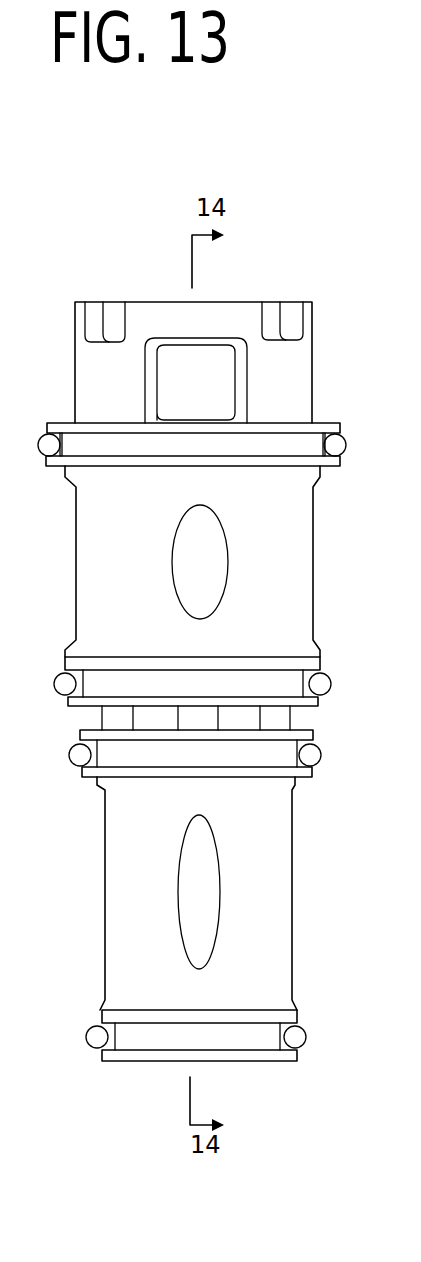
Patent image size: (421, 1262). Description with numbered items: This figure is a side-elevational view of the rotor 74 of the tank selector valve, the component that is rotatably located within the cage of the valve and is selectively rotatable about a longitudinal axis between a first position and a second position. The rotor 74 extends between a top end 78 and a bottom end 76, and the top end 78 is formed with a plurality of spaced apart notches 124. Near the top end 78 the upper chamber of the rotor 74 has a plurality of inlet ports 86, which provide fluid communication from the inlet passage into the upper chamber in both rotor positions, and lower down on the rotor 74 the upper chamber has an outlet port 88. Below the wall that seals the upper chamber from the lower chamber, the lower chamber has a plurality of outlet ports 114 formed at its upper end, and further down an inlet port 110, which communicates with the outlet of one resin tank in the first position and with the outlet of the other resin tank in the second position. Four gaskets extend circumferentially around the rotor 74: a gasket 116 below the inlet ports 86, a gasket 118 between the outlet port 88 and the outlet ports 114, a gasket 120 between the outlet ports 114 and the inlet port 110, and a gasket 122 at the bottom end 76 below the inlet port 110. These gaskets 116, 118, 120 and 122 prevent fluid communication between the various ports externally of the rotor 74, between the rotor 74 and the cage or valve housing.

The rotor 74 is at (52, 396).
The bottom end 76 is at (295, 1058).
The top end 78 is at (312, 303).
The inlet ports 86 is at (233, 383).
The outlet port 88 is at (224, 559).
The inlet port 110 is at (216, 872).
The outlet ports 114 is at (243, 722).
The gasket 116 is at (347, 445).
The gasket 118 is at (332, 684).
The gasket 120 is at (323, 756).
The gasket 122 is at (307, 1036).
The notches 124 is at (124, 316).